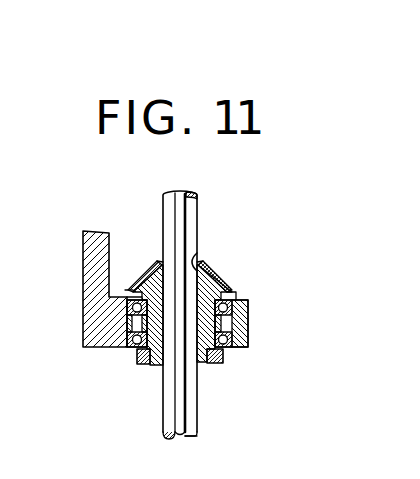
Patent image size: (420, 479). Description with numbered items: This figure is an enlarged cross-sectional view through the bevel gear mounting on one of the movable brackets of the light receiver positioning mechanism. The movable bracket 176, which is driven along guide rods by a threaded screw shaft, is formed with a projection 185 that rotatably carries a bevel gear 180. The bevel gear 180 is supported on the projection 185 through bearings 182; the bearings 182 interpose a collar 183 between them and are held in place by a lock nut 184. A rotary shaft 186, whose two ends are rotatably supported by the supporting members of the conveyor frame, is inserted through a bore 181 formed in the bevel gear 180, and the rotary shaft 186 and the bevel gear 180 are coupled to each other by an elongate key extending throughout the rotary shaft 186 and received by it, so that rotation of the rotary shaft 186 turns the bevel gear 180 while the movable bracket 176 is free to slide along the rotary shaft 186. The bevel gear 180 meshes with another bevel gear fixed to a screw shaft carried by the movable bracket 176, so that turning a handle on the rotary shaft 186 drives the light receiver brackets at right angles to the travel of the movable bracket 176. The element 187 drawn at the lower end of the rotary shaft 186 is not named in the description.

The bracket 176 is at (83, 266).
The pulley hub 180 is at (229, 276).
The snap ring 181 is at (196, 261).
The ball bearing 182 is at (225, 296).
The bearing outer race 183 is at (249, 322).
The retaining collar 184 is at (214, 363).
The ball bearing 185 is at (249, 342).
The shaft 186 is at (170, 409).
The shaft end 187 is at (182, 421).